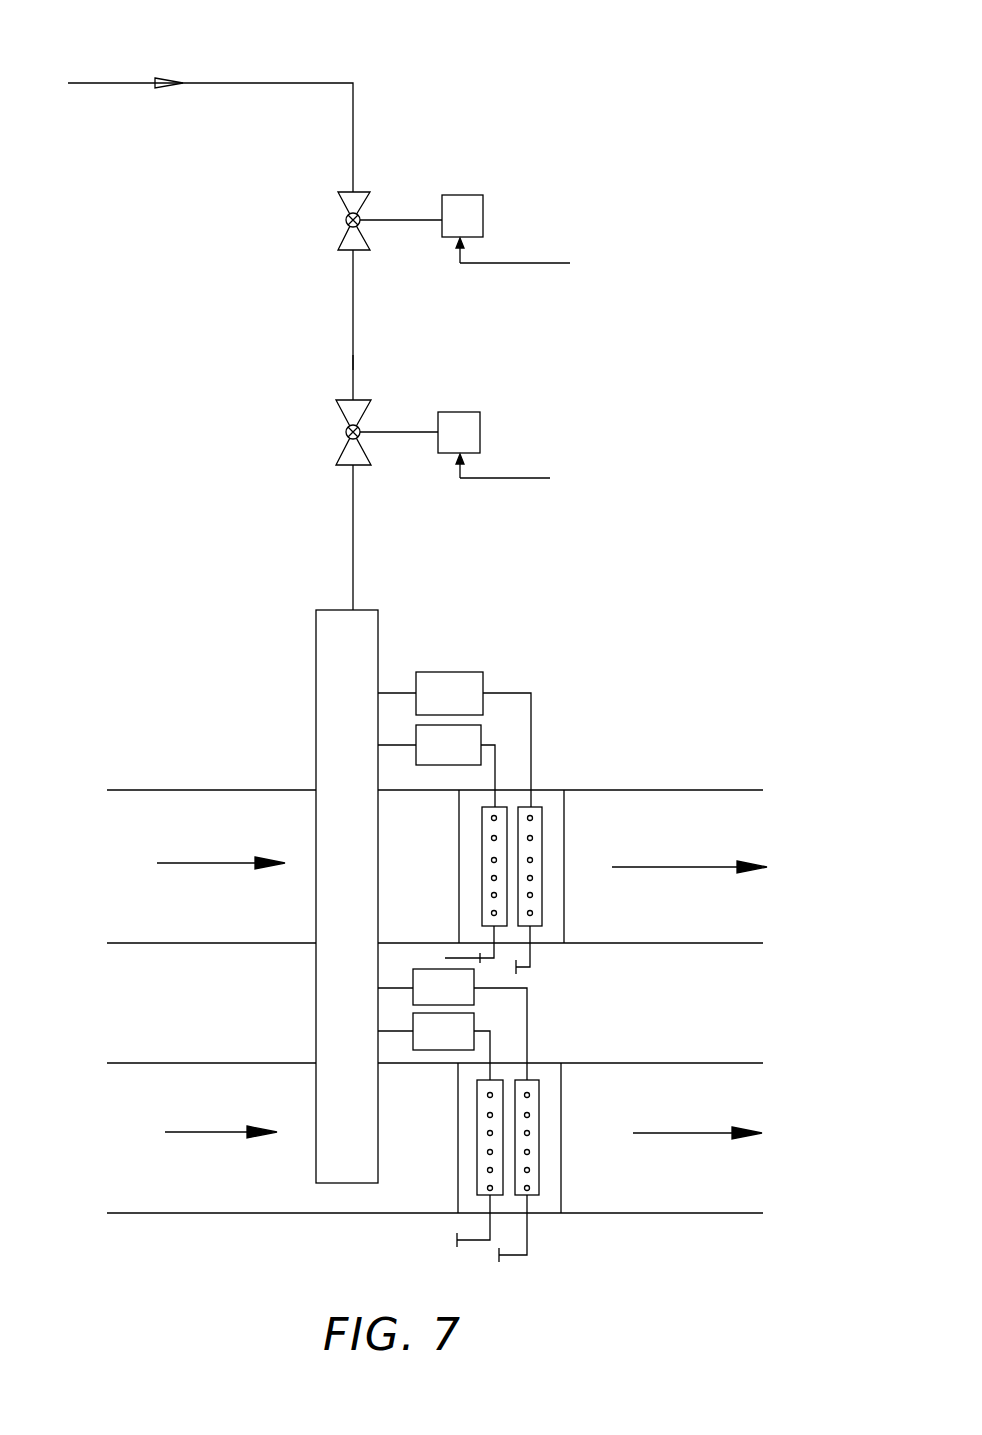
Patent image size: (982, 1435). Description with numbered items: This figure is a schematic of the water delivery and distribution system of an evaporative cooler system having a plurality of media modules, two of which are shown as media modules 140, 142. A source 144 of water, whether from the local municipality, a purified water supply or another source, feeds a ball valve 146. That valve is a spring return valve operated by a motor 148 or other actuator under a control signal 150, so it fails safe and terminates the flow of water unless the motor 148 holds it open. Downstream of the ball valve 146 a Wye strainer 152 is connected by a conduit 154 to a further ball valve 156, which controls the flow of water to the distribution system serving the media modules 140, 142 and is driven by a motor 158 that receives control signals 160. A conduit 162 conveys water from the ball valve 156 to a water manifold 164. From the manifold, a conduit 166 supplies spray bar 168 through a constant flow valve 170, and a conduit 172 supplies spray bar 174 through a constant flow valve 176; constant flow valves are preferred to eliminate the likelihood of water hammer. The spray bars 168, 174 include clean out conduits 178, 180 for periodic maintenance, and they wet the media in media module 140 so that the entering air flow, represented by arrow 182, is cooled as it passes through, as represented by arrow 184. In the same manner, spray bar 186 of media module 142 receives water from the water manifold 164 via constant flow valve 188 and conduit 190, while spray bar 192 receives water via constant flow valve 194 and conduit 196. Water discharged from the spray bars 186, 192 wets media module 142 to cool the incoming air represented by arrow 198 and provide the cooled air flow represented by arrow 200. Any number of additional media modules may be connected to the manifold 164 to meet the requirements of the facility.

The media module 140 is at (562, 818).
The media module 142 is at (561, 1095).
The source of water 144 is at (93, 88).
The ball valve 146 is at (340, 206).
The motor 148 is at (483, 200).
The control signal 150 is at (515, 263).
The Wye strainer 152 is at (353, 312).
The conduit 154 is at (353, 362).
The ball valve 156 is at (367, 405).
The motor 158 is at (480, 433).
The control signals 160 is at (520, 478).
The conduit 162 is at (353, 557).
The water manifold 164 is at (378, 630).
The conduit 166 is at (395, 690).
The spray bar 168 is at (545, 810).
The constant flow valve 170 is at (475, 672).
The conduit 172 is at (398, 743).
The spray bar 174 is at (482, 853).
The constant flow valve 176 is at (416, 762).
The clean out conduit 178 is at (533, 967).
The clean out conduit 180 is at (445, 958).
The arrow 182 is at (215, 864).
The arrow 184 is at (645, 867).
The spray bar 186 is at (539, 1163).
The constant flow valve 188 is at (474, 1003).
The conduit 190 is at (527, 1003).
The spray bar 192 is at (477, 1133).
The constant flow valve 194 is at (428, 1052).
The conduit 196 is at (485, 1053).
The arrow 198 is at (213, 1133).
The arrow 200 is at (673, 1133).